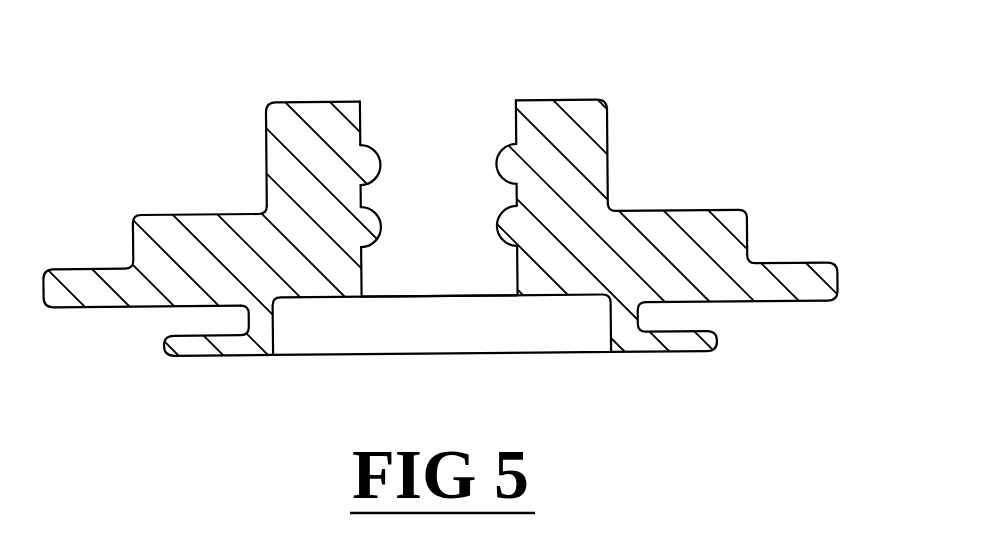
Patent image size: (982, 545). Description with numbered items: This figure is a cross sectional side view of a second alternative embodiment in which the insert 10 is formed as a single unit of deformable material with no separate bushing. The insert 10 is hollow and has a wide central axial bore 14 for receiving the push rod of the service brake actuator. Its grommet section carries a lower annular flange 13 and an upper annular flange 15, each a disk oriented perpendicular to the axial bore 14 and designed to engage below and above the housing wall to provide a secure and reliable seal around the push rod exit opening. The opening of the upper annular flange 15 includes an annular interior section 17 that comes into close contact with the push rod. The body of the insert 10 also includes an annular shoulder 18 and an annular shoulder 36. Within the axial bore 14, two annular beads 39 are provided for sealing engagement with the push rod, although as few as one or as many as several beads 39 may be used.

The insert 10 is at (647, 93).
The lower annular flange 13 is at (683, 345).
The central axial bore 14 is at (470, 112).
The upper annular flange 15 is at (794, 278).
The annular interior section 17 is at (318, 290).
The annular shoulder 18 is at (275, 102).
The annular shoulder 36 is at (151, 221).
The annular bead 39 is at (381, 163).